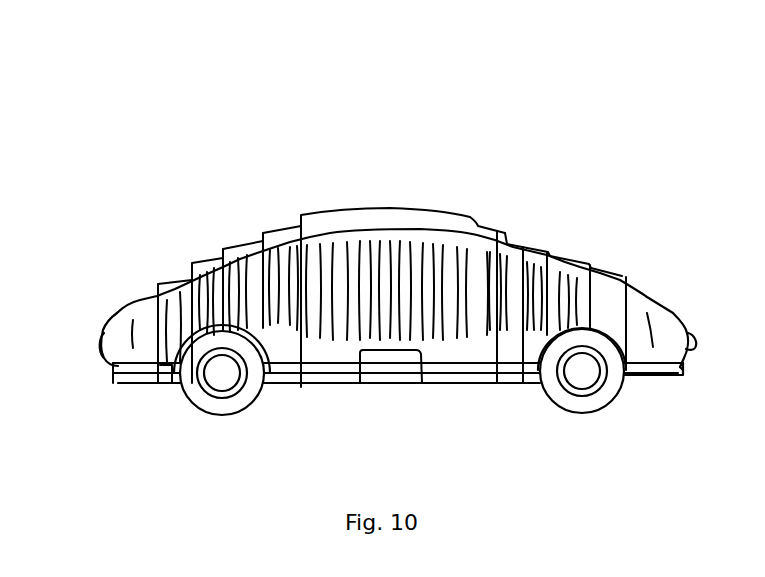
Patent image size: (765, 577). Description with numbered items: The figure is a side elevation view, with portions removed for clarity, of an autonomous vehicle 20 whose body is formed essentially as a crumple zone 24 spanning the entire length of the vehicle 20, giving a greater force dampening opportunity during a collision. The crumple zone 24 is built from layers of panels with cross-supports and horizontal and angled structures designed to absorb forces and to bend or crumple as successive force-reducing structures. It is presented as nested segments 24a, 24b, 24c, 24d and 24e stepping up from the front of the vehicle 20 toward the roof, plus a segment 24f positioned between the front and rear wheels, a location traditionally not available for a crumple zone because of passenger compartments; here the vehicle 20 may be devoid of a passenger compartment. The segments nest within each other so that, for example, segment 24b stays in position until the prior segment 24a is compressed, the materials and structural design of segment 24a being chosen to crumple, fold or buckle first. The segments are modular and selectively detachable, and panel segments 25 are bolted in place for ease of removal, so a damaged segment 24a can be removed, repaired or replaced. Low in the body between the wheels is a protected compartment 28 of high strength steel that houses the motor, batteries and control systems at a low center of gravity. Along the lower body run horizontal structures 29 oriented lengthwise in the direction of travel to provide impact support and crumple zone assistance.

The autonomous vehicle 20 is at (649, 100).
The crumple zone 24 is at (503, 230).
The crumple zone segment 24a is at (128, 290).
The crumple zone segment 24b is at (174, 269).
The crumple zone segment 24c is at (201, 249).
The crumple zone segment 24d is at (233, 234).
The crumple zone segment 24e is at (280, 218).
The crumple zone segment 24f is at (420, 183).
The panel segment 25 is at (117, 308).
The protected compartment 28 is at (407, 396).
The horizontal structure 29 is at (136, 380).